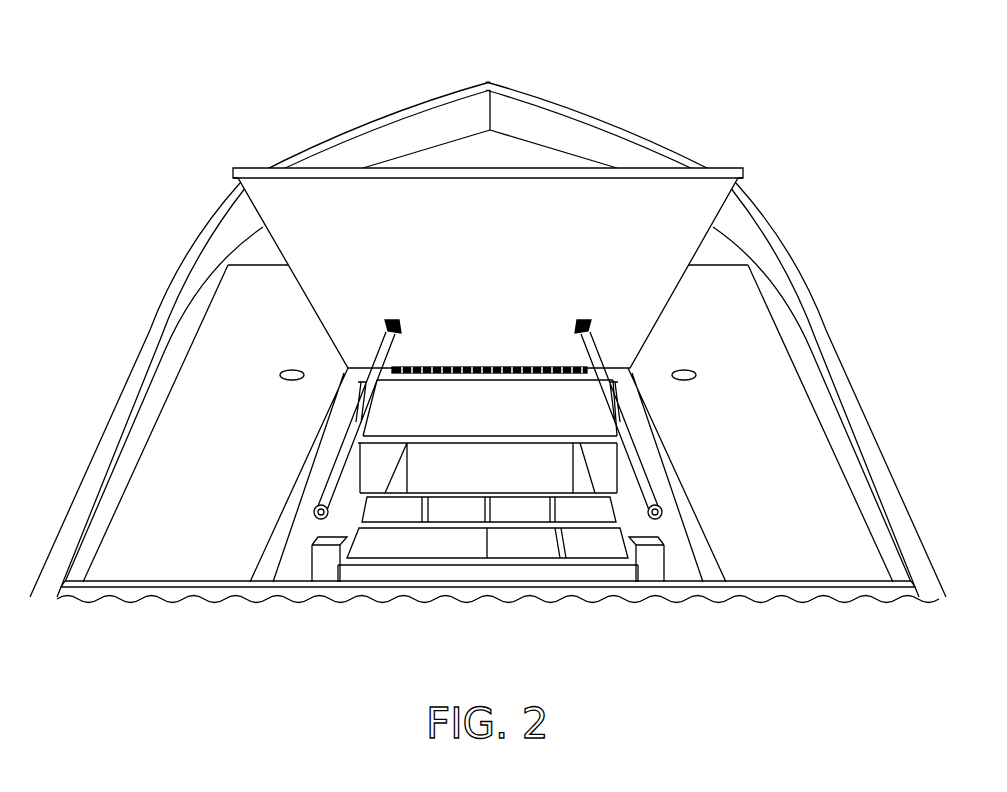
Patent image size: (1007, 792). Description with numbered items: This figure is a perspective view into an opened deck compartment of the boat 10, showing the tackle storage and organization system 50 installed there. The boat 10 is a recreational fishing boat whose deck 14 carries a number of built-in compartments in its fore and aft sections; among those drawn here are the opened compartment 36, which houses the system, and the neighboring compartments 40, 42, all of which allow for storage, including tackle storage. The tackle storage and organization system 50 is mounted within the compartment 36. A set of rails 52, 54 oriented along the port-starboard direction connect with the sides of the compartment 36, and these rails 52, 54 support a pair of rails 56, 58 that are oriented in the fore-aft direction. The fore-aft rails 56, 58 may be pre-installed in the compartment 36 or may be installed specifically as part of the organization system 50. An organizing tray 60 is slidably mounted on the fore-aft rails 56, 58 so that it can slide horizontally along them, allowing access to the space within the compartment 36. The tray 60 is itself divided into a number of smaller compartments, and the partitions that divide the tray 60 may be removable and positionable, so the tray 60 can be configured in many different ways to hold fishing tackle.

The boat 10 is at (296, 87).
The deck 14 is at (500, 164).
The compartment 36 is at (475, 299).
The compartment 40 is at (780, 422).
The compartment 42 is at (196, 522).
The tackle storage and organization system 50 is at (612, 507).
The rail 52 is at (500, 437).
The rail 54 is at (330, 540).
The rail 56 is at (397, 464).
The rail 58 is at (587, 473).
The organizing tray 60 is at (445, 558).